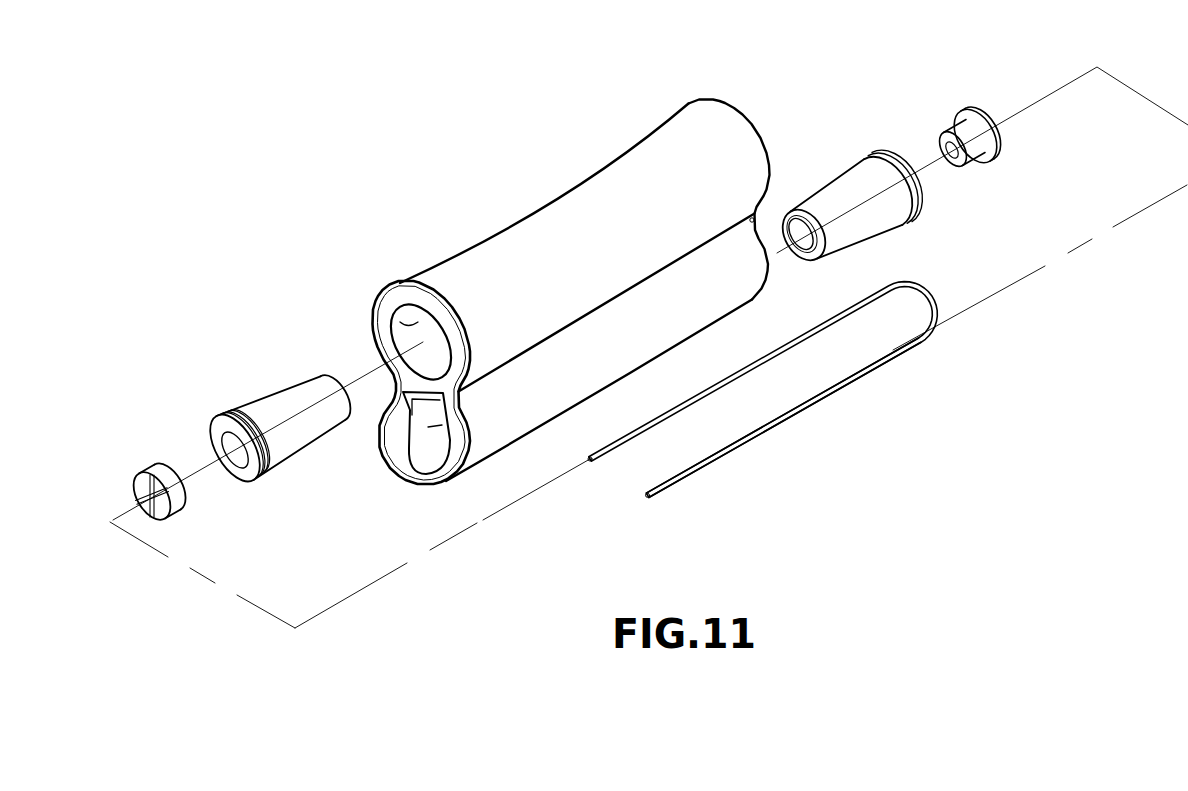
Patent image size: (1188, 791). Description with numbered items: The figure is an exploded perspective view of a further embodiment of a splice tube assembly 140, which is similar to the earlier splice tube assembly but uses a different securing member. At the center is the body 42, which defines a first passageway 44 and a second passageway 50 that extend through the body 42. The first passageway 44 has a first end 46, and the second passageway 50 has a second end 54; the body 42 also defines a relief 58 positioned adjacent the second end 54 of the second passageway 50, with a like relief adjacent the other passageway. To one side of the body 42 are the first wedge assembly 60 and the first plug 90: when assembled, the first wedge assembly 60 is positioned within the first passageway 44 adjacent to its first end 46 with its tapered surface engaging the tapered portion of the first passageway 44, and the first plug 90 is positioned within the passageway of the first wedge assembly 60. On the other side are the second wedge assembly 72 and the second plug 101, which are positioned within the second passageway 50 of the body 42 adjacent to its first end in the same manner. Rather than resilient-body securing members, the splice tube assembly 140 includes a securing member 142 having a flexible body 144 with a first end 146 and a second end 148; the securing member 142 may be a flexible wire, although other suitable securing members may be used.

The splice tube assembly 140 is at (472, 148).
The body 42 is at (587, 221).
The first passageway 44 is at (410, 324).
The first end of the first passageway 46 is at (381, 314).
The second passageway 50 is at (443, 425).
The second end of the second passageway 54 is at (410, 412).
The relief 58 is at (411, 416).
The first wedge assembly 60 is at (281, 408).
The first plug 90 is at (140, 482).
The second wedge assembly 72 is at (863, 183).
The second plug 101 is at (958, 122).
The securing member 142 is at (862, 375).
The flexible body 144 is at (767, 433).
The first end 146 is at (591, 462).
The second end 148 is at (648, 497).